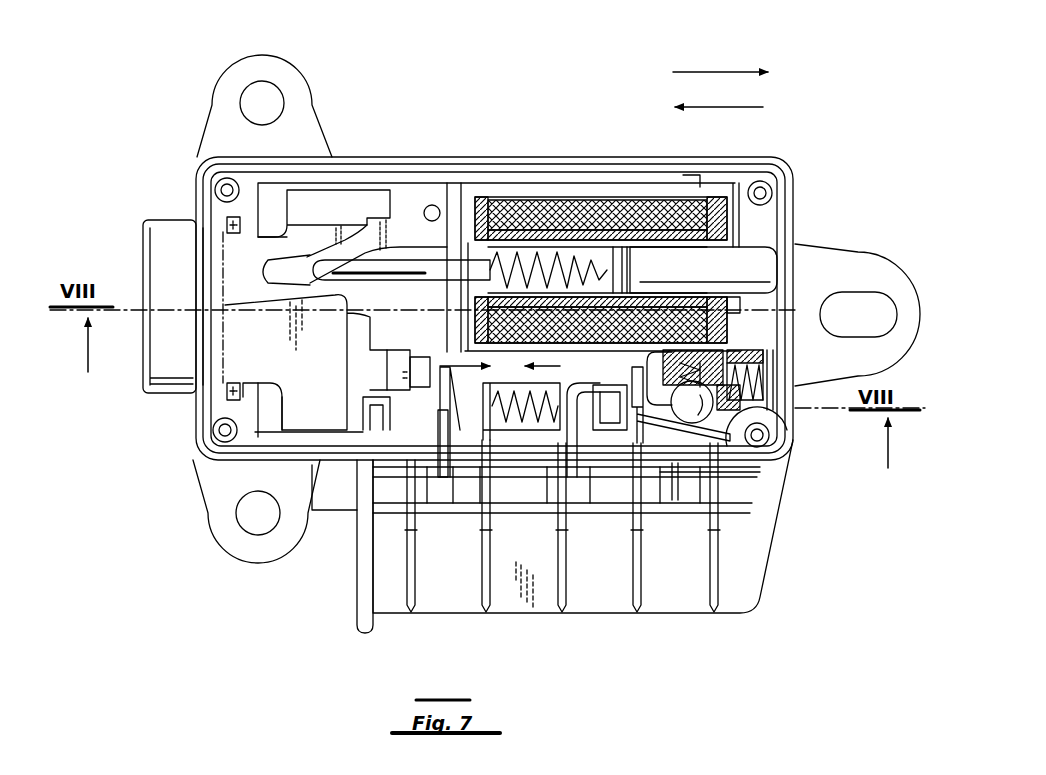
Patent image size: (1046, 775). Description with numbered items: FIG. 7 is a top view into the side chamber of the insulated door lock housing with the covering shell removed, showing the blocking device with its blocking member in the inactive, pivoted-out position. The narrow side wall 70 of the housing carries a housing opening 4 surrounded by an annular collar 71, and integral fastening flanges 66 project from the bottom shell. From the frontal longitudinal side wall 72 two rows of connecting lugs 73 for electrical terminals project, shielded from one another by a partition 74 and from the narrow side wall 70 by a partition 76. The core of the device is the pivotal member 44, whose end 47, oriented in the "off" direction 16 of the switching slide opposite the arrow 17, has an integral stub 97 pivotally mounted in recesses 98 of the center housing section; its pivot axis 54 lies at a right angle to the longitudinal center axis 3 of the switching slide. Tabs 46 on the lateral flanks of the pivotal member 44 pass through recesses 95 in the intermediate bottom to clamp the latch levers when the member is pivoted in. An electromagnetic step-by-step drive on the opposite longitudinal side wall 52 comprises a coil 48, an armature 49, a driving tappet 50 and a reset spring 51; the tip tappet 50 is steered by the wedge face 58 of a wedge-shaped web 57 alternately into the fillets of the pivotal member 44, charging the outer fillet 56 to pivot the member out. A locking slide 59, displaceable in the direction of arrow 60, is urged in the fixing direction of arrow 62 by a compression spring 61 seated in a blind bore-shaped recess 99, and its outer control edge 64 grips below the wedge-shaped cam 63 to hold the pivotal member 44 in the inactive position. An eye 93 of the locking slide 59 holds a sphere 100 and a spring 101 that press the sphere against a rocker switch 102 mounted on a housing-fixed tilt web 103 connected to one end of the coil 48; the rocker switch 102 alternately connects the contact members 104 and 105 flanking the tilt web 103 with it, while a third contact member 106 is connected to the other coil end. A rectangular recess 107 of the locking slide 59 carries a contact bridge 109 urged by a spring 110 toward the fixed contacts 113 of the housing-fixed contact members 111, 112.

The longitudinal center axis 3 is at (395, 312).
The housing opening 4 is at (138, 363).
The "off" direction 16 is at (752, 107).
The movement direction arrow 17 is at (700, 72).
The pivotal member 44 is at (432, 172).
The tabs 46 is at (378, 193).
The end of the pivotal member 47 is at (207, 293).
The coil 48 is at (560, 207).
The armature 49 is at (763, 267).
The driving tappet 50 is at (402, 267).
The reset spring 51 is at (568, 245).
The longitudinal side wall 52 is at (430, 157).
The pivot axis 54 is at (222, 338).
The outer fillet 56 is at (324, 213).
The wedge-shaped web 57 is at (293, 255).
The wedge face 58 is at (267, 272).
The locking slide 59 is at (433, 350).
The arrow 60 is at (473, 358).
The compression spring 61 is at (747, 355).
The arrow 62 is at (547, 363).
The wedge-shaped cam 63 is at (393, 360).
The outer control edge 64 is at (423, 360).
The fastening flanges 66 is at (290, 68).
The narrow side wall 70 is at (193, 185).
The annular collar 71 is at (153, 235).
The frontal longitudinal side wall 72 is at (347, 467).
The connecting lugs 73 is at (482, 587).
The partition 74 is at (747, 568).
The partition 76 is at (365, 602).
The eye 93 is at (730, 440).
The recesses 95 is at (393, 192).
The stub 97 is at (213, 380).
The recesses 98 is at (237, 226).
The blind bore-shaped recess 99 is at (720, 418).
The sphere 100 is at (668, 370).
The spring 101 is at (708, 362).
The rocker switch 102 is at (700, 474).
The tilt web 103 is at (678, 487).
The contact member 104 is at (727, 607).
The contact member 105 is at (648, 603).
The third contact member 106 is at (570, 603).
The rectangular recess 107 is at (573, 477).
The contact bridge 109 is at (500, 440).
The spring 110 is at (527, 425).
The contact member 111 is at (494, 617).
The contact member 112 is at (410, 622).
The fixed contact 113 is at (442, 413).